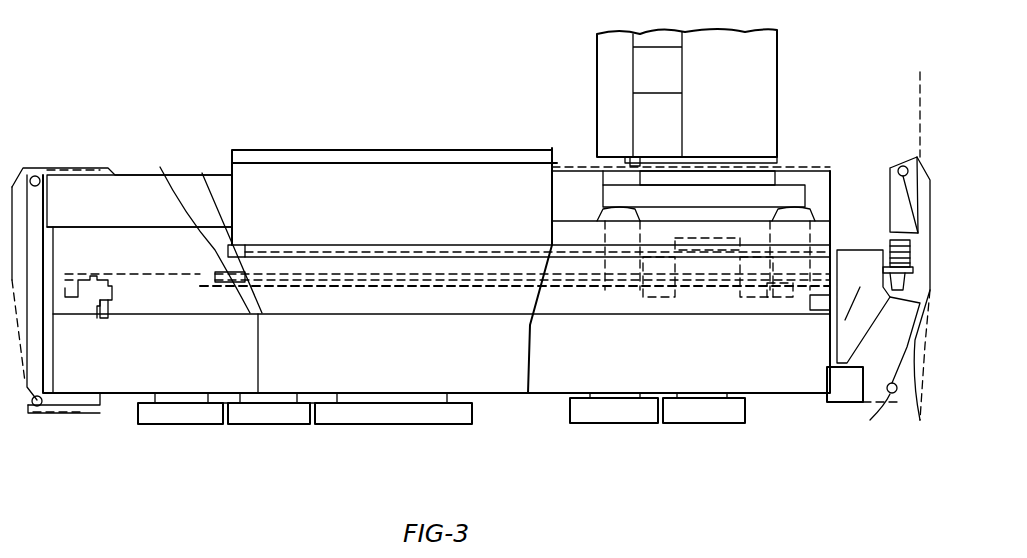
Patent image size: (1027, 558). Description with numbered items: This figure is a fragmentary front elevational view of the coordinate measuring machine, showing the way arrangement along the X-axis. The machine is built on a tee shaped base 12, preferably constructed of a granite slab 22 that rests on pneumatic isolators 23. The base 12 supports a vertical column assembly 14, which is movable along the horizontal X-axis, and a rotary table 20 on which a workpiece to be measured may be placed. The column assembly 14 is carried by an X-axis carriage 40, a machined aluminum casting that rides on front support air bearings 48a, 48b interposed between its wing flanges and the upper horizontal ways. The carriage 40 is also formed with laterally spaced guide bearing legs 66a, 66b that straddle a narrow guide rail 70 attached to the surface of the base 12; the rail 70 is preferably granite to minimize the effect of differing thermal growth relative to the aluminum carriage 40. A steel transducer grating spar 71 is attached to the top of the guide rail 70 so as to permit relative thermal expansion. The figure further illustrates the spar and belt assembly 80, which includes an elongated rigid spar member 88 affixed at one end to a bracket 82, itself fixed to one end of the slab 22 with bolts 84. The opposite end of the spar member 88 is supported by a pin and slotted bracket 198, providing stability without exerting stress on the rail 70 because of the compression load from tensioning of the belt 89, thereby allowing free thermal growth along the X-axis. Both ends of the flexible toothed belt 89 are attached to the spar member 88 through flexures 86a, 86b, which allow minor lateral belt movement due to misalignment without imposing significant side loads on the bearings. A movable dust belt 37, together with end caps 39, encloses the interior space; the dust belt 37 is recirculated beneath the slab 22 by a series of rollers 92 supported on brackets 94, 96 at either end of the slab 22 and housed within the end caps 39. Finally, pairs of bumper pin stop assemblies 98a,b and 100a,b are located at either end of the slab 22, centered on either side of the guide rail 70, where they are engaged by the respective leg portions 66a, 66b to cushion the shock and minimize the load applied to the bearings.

The base 12 is at (518, 402).
The vertical column assembly 14 is at (823, 12).
The rotary table 20 is at (432, 112).
The granite slab 22 is at (665, 356).
The pneumatic isolators 23 is at (138, 417).
The dust belt 37 is at (75, 409).
The end caps 39 is at (52, 171).
The X-axis carriage 40 is at (718, 214).
The front support air bearing 48a is at (806, 170).
The front support air bearing 48b is at (597, 214).
The guide bearing leg 66a is at (742, 298).
The guide bearing leg 66b is at (642, 298).
The guide rail 70 is at (231, 294).
The steel transducer grating spar 71 is at (132, 271).
The spar and belt assembly 80 is at (347, 252).
The bracket 82 is at (860, 351).
The bolts 84 is at (843, 320).
The flexure 86a is at (888, 240).
The flexure 86b is at (202, 170).
The rigid spar member 88 is at (229, 278).
The flexible toothed belt 89 is at (585, 245).
The rollers 92 is at (38, 186).
The bracket 94 is at (25, 403).
The bracket 96 is at (918, 405).
The bumper pin stop assemblies 98a,b is at (108, 318).
The bumper pin stop assemblies 100a,b is at (774, 310).
The pin and slotted bracket 198 is at (160, 165).